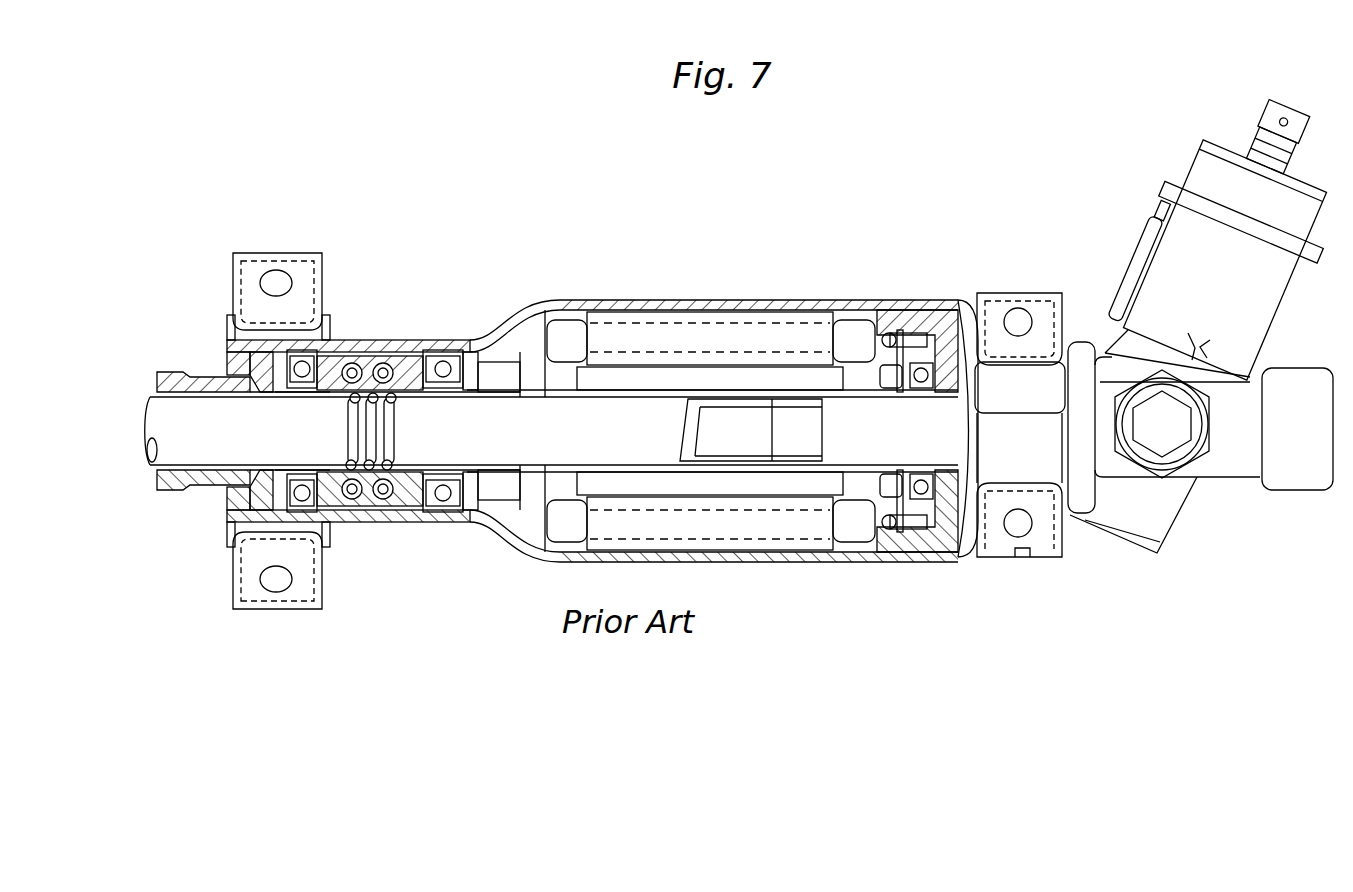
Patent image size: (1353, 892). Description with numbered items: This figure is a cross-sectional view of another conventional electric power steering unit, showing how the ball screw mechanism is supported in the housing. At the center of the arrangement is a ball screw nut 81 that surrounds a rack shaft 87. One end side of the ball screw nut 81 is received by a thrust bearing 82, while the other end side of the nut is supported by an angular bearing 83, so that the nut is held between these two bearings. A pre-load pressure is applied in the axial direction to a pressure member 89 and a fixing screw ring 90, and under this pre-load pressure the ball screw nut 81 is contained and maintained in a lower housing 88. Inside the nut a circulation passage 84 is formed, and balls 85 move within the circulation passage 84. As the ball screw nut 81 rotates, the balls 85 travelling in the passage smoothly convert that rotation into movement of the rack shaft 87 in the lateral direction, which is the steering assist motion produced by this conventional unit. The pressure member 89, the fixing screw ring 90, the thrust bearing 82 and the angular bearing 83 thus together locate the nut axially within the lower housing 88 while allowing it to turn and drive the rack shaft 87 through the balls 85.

The ball screw nut 81 is at (364, 374).
The thrust bearing 82 is at (447, 357).
The angular bearing 83 is at (318, 357).
The circulation passage 84 is at (394, 373).
The balls 85 is at (396, 400).
The rack shaft 87 is at (842, 437).
The lower housing 88 is at (615, 304).
The pressure member 89 is at (258, 366).
The fixing screw ring 90 is at (232, 360).